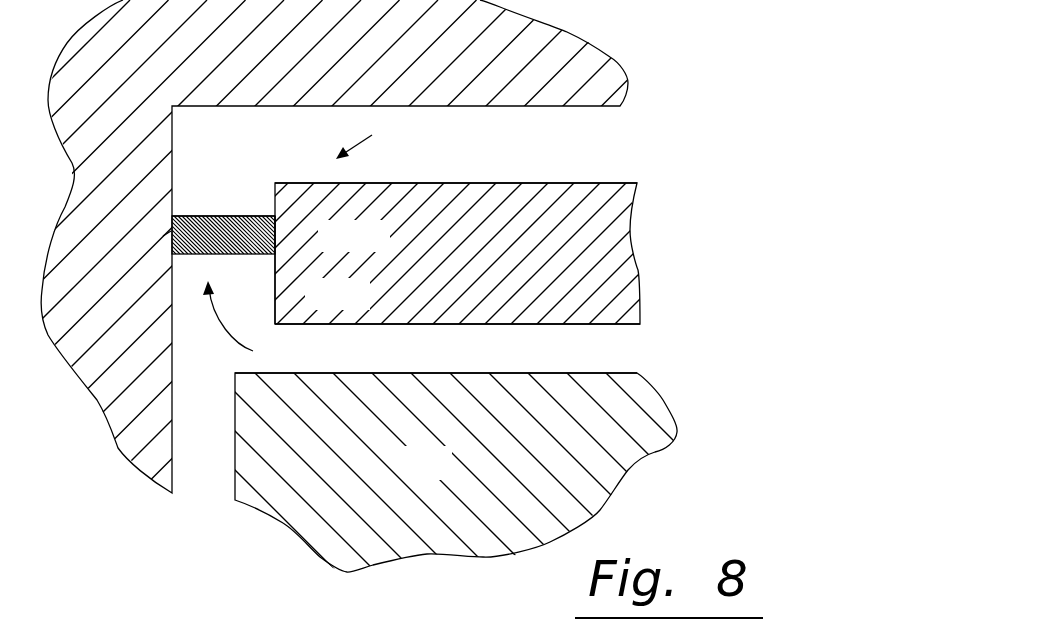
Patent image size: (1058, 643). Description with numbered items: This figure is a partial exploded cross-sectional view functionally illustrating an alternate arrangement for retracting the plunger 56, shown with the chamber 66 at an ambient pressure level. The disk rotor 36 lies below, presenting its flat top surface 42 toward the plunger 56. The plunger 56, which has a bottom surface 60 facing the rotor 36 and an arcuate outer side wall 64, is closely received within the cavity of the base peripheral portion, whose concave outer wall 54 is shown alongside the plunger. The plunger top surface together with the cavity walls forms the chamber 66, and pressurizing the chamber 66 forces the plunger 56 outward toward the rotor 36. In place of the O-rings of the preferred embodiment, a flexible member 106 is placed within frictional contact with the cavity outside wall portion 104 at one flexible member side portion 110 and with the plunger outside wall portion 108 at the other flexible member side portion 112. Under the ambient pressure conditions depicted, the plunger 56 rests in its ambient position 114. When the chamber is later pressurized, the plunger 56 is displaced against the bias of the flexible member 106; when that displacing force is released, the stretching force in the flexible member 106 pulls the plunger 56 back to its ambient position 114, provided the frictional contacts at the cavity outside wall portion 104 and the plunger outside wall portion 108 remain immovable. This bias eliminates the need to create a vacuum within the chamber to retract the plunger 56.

The disk rotor 36 is at (450, 477).
The flat top surface 42 is at (597, 372).
The outer wall 54 is at (172, 130).
The plunger 56 is at (619, 278).
The bottom surface 60 is at (405, 326).
The outer side wall 64 is at (272, 301).
The chamber 66 is at (582, 169).
The cavity outside wall portion 104 is at (172, 250).
The flexible member 106 is at (254, 323).
The plunger outside wall portion 108 is at (263, 275).
The flexible member side portion 110 is at (192, 216).
The flexible member side portion 112 is at (262, 244).
The ambient position 114 is at (388, 140).